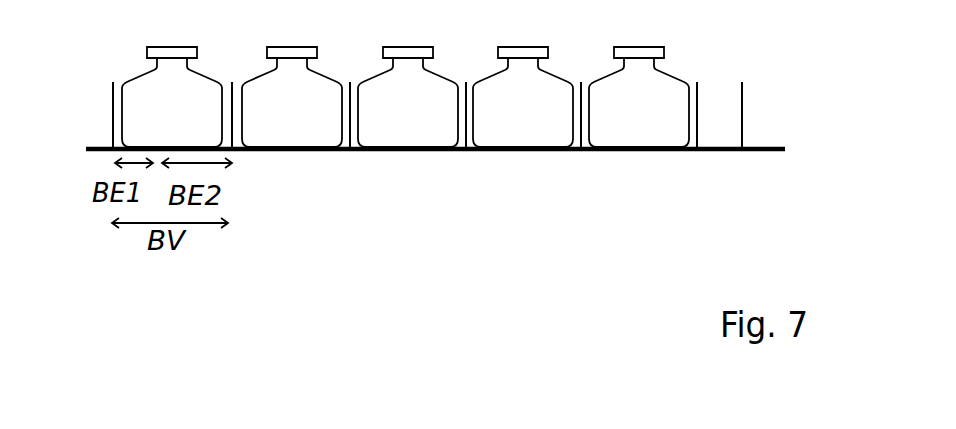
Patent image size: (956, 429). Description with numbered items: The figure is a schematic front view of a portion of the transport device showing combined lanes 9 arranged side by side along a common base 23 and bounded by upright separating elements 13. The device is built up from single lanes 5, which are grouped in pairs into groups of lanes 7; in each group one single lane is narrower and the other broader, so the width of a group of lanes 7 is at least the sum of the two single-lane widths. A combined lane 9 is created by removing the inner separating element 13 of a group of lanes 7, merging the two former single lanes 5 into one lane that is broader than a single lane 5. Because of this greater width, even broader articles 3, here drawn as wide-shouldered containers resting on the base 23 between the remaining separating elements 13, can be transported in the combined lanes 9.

The articles 3 is at (683, 77).
The single lane 5 is at (236, 98).
The combined lane 9 is at (353, 100).
The separating element 13 is at (743, 107).
The support surface / conveyor 23 is at (762, 153).
The group of lanes 7 is at (227, 260).